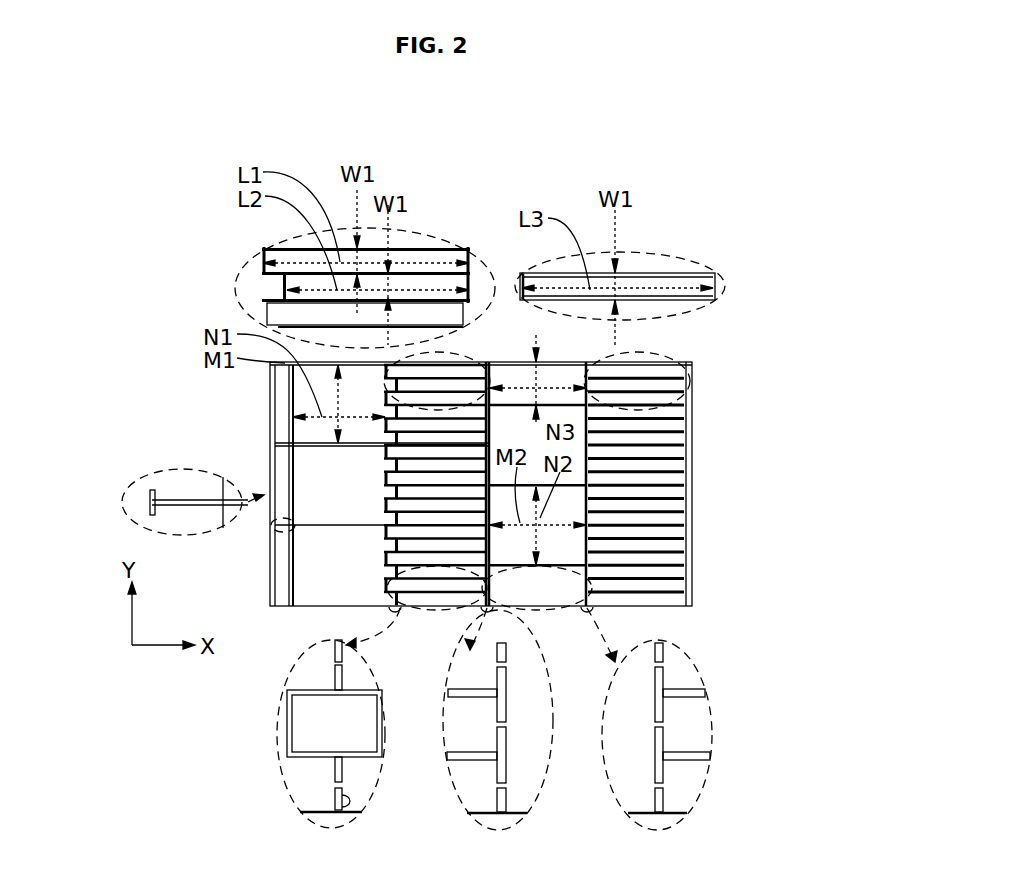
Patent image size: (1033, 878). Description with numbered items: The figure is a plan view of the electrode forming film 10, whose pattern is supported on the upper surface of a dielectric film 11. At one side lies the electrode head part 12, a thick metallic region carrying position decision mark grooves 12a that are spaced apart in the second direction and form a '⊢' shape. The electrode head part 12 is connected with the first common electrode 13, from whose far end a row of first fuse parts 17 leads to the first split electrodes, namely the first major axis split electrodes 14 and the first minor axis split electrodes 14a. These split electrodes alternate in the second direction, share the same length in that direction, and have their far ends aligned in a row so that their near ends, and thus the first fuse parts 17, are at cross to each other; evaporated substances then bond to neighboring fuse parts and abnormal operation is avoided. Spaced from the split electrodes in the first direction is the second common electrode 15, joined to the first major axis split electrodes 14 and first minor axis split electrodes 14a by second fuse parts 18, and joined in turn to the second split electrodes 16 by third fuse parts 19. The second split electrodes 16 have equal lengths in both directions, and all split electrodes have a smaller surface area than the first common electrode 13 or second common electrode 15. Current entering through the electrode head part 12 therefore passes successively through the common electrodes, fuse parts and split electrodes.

The electrode forming film 10 is at (700, 379).
The dielectric film 11 is at (692, 476).
The electrode head part 12 is at (145, 470).
The position decision mark grooves 12a is at (228, 442).
The first common electrode 13 is at (262, 287).
The first major axis split electrodes 14 is at (440, 252).
The first minor axis split electrodes 14a is at (290, 248).
The second common electrode 15 is at (534, 607).
The second split electrodes 16 is at (680, 310).
The first fuse parts 17 is at (262, 260).
The second fuse parts 18 is at (418, 318).
The third fuse parts 19 is at (520, 285).